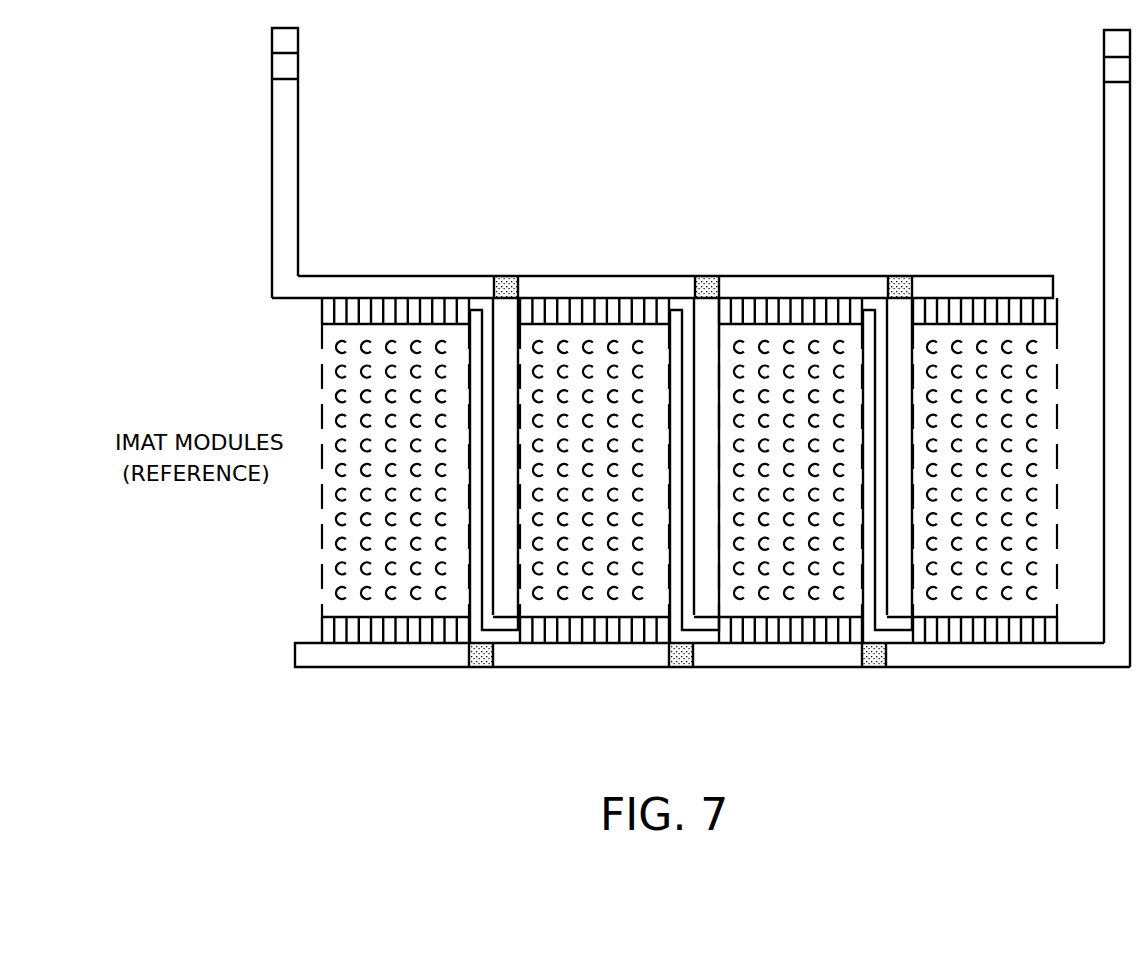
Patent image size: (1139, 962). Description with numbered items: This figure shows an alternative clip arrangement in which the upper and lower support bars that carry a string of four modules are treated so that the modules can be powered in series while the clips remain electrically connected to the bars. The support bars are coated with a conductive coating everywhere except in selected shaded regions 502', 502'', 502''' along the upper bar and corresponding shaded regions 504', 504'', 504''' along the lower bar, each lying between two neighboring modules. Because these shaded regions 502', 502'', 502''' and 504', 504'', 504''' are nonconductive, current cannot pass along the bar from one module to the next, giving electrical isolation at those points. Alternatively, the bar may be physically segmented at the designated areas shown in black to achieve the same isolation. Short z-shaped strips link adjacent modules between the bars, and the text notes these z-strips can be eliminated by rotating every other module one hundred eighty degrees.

The shaded region of support bar 502' is at (539, 263).
The shaded region of support bar 502'' is at (743, 263).
The shaded region of support bar 502''' is at (937, 264).
The shaded region of support bar 504' is at (481, 689).
The shaded region of support bar 504'' is at (684, 689).
The shaded region of support bar 504''' is at (882, 689).